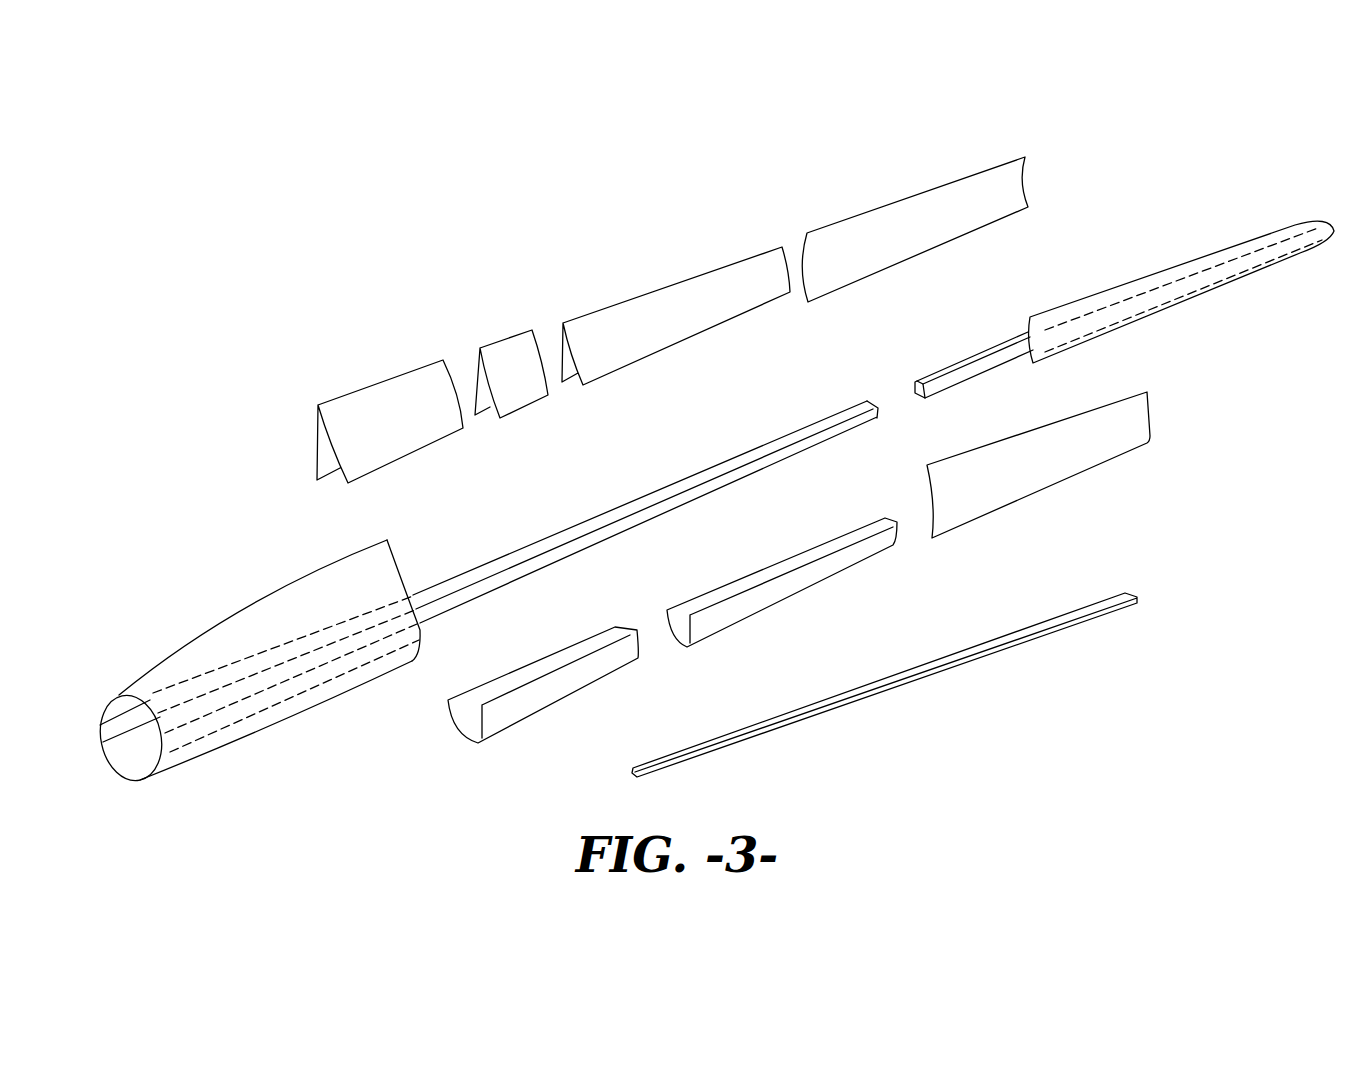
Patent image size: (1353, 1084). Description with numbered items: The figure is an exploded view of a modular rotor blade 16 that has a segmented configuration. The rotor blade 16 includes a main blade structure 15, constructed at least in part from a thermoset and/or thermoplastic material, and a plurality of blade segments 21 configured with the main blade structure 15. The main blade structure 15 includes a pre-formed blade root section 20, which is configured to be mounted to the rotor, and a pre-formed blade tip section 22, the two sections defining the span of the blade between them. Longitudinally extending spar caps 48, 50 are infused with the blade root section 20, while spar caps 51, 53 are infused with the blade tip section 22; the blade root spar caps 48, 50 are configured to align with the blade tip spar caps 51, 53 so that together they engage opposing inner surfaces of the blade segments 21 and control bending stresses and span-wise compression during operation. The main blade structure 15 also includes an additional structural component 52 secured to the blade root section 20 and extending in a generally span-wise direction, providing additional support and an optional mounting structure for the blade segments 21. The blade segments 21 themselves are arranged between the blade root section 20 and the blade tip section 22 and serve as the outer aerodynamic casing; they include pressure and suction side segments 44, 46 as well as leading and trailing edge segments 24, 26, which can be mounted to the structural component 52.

The main blade structure 15 is at (247, 600).
The rotor blade 16 is at (1088, 172).
The blade root section 20 is at (250, 737).
The blade segment 21 is at (345, 388).
The blade tip section 22 is at (1190, 300).
The leading edge segment 24 is at (803, 593).
The trailing edge segment 26 is at (388, 378).
The pressure side segment 44 is at (912, 197).
The suction side segment 46 is at (1043, 488).
The spar cap 48 is at (462, 578).
The spar cap 50 is at (633, 520).
The spar cap 51 is at (915, 380).
The structural component 52 is at (983, 660).
The spar cap 53 is at (967, 383).